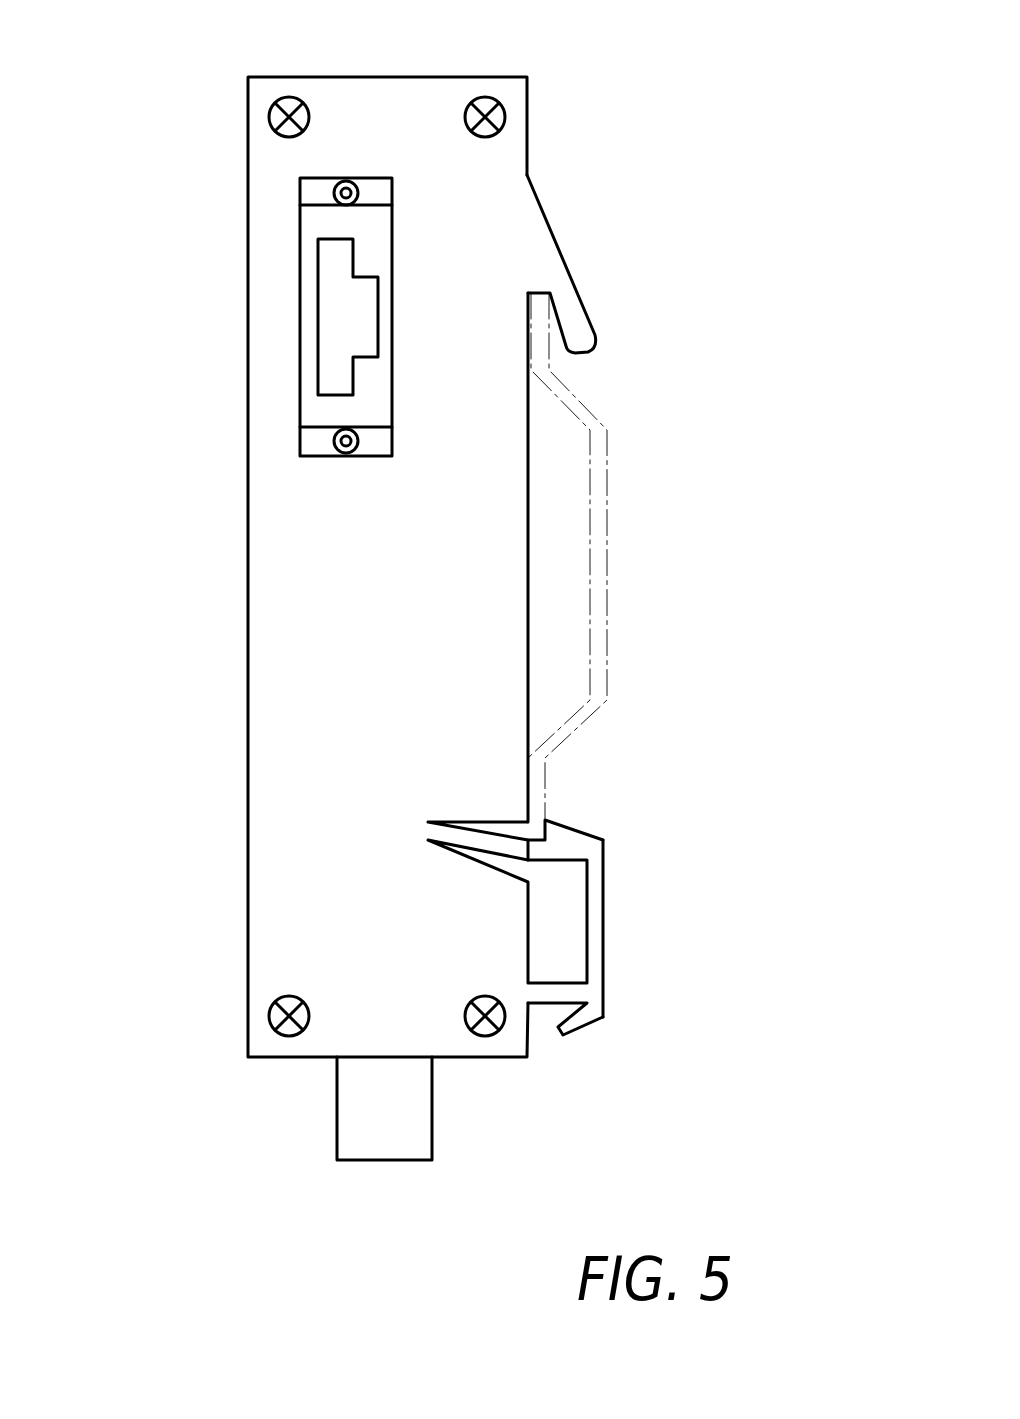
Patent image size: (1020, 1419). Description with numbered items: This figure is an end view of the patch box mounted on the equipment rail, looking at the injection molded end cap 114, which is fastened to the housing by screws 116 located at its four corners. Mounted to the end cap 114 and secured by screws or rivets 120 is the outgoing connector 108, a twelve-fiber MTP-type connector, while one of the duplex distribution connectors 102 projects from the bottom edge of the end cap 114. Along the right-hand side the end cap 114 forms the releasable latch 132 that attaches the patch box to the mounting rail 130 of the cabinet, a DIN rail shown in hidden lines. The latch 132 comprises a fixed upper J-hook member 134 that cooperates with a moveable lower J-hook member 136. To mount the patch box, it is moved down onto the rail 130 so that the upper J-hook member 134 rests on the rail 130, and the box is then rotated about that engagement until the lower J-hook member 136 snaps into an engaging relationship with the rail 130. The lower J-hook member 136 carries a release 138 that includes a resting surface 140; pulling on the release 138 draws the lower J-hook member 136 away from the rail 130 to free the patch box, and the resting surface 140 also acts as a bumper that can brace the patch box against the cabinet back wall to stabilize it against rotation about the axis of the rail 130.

The duplex distribution connector 102 is at (401, 1160).
The outgoing connector 108 is at (300, 308).
The end cap 114 is at (397, 95).
The screws 116 is at (293, 97).
The screws or rivets 120 is at (334, 193).
The mounting rail 130 is at (607, 585).
The releasable latch 132 is at (577, 646).
The upper J-hook member 134 is at (582, 350).
The lower J-hook member 136 is at (575, 828).
The release 138 is at (583, 1013).
The resting surface 140 is at (604, 917).